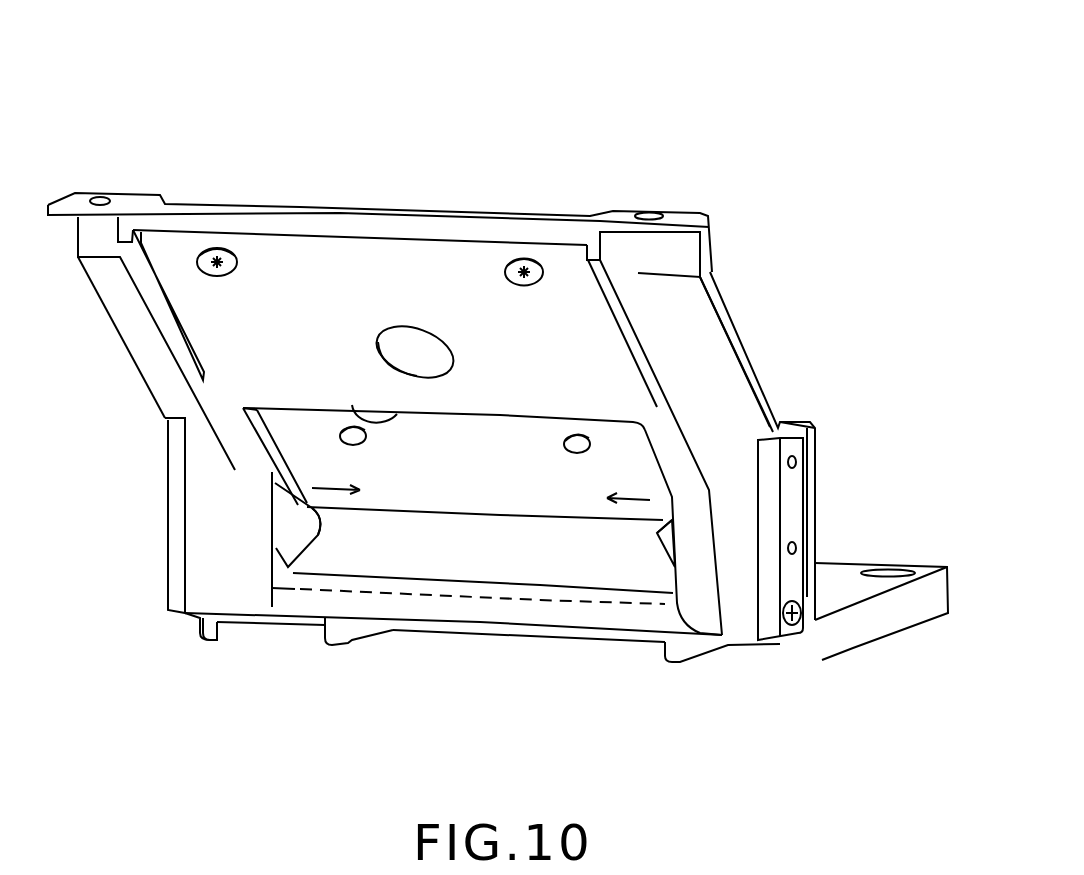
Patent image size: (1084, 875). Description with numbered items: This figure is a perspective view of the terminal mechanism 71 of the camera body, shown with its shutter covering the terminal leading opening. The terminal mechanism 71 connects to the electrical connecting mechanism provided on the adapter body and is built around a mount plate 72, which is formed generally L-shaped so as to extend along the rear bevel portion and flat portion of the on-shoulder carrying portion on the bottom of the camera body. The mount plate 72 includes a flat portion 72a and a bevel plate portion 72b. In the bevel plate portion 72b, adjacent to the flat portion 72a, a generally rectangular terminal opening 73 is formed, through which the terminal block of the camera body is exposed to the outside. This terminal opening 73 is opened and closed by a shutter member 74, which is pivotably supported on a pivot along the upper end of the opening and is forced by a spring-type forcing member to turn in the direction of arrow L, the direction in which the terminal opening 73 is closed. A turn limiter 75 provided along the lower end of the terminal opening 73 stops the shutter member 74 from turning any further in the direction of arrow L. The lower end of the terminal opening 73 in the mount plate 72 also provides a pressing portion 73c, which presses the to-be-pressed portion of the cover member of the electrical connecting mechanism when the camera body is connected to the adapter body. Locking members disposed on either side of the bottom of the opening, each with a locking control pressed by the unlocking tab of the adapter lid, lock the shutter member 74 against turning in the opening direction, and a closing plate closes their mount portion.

The terminal mechanism 71 is at (660, 123).
The mount plate 72 is at (687, 252).
The flat portion 72a is at (725, 367).
The bevel plate portion 72b is at (868, 634).
The terminal opening 73 is at (352, 405).
The pressing portion 73c is at (525, 617).
The shutter member 74 is at (467, 537).
The turn limiter 75 is at (347, 612).
The arrow L is at (818, 427).